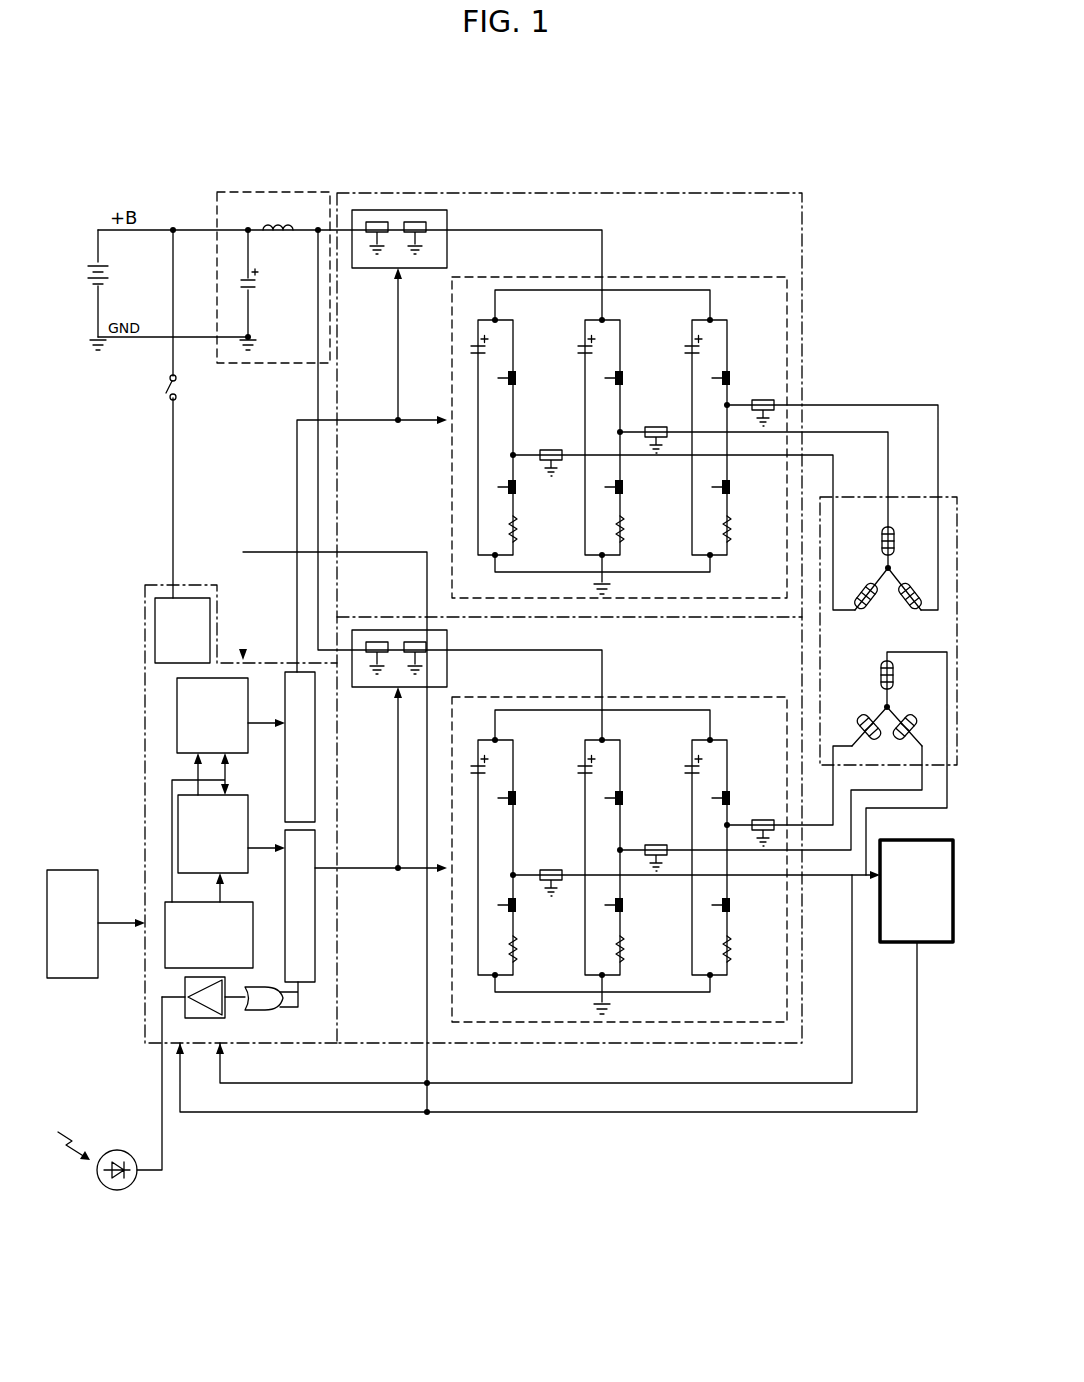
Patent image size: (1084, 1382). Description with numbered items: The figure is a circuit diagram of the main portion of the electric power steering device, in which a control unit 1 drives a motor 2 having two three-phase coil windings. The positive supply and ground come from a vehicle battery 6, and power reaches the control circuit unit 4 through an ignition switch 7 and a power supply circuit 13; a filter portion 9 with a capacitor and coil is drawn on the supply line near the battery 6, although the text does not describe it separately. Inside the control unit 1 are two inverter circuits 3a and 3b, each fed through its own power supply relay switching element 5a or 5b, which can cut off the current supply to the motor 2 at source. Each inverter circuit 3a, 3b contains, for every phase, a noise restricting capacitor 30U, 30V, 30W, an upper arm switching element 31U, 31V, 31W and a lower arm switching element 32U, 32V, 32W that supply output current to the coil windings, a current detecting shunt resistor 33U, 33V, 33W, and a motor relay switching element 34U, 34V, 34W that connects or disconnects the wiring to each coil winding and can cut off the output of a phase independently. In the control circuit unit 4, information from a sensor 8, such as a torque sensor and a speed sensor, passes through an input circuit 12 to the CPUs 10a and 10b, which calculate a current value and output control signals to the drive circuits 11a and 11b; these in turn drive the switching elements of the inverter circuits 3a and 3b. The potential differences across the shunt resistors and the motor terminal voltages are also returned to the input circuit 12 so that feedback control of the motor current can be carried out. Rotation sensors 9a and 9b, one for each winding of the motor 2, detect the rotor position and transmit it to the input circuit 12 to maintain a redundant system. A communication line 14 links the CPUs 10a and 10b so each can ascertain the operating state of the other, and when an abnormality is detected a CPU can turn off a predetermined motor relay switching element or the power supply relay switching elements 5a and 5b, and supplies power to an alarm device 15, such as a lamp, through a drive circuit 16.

The control unit 1 is at (728, 158).
The motor 2 is at (908, 495).
The inverter circuit 3a is at (790, 298).
The inverter circuit 3b is at (710, 1022).
The control circuit unit 4 is at (145, 660).
The power supply relay switching element 5a is at (395, 210).
The power supply relay switching element 5b is at (382, 630).
The battery 6 is at (95, 262).
The ignition switch 7 is at (168, 388).
The sensor 8 is at (65, 978).
The noise filter 9 is at (240, 192).
The rotation sensor 9a is at (880, 877).
The rotation sensor 9b is at (887, 942).
The CPU 10a is at (177, 700).
The CPU 10b is at (178, 830).
The drive circuit 11a is at (290, 672).
The drive circuit 11b is at (305, 982).
The input circuit 12 is at (165, 950).
The power supply circuit 13 is at (157, 598).
The communication line 14 is at (172, 790).
The alarm device 15 is at (103, 1190).
The drive circuit 16 is at (220, 1018).
The noise restricting capacitor 30U is at (478, 345).
The noise restricting capacitor 30V is at (585, 345).
The noise restricting capacitor 30W is at (692, 345).
The upper arm switching element 31U is at (520, 372).
The upper arm switching element 31V is at (623, 372).
The upper arm switching element 31W is at (732, 372).
The lower arm switching element 32U is at (518, 490).
The lower arm switching element 32V is at (625, 490).
The lower arm switching element 32W is at (732, 490).
The shunt resistor 33U is at (517, 535).
The shunt resistor 33V is at (625, 535).
The shunt resistor 33W is at (731, 535).
The motor relay switching element 34U is at (551, 450).
The motor relay switching element 34V is at (656, 427).
The motor relay switching element 34W is at (763, 400).